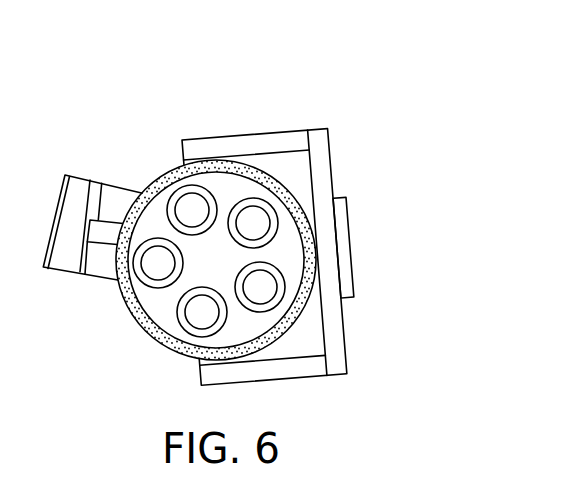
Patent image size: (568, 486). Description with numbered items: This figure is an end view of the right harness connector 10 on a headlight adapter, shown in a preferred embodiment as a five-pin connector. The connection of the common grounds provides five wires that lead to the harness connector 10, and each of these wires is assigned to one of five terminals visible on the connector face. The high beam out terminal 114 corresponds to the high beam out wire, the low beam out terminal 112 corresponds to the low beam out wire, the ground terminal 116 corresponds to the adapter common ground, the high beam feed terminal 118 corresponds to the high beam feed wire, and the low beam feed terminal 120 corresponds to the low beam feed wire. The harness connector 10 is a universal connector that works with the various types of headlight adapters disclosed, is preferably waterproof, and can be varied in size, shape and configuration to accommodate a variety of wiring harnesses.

The right harness connector 10 is at (146, 187).
The low beam out terminal 112 is at (193, 316).
The high beam out terminal 114 is at (267, 290).
The ground terminal 116 is at (262, 222).
The high beam feed terminal 118 is at (193, 213).
The low beam feed terminal 120 is at (155, 268).